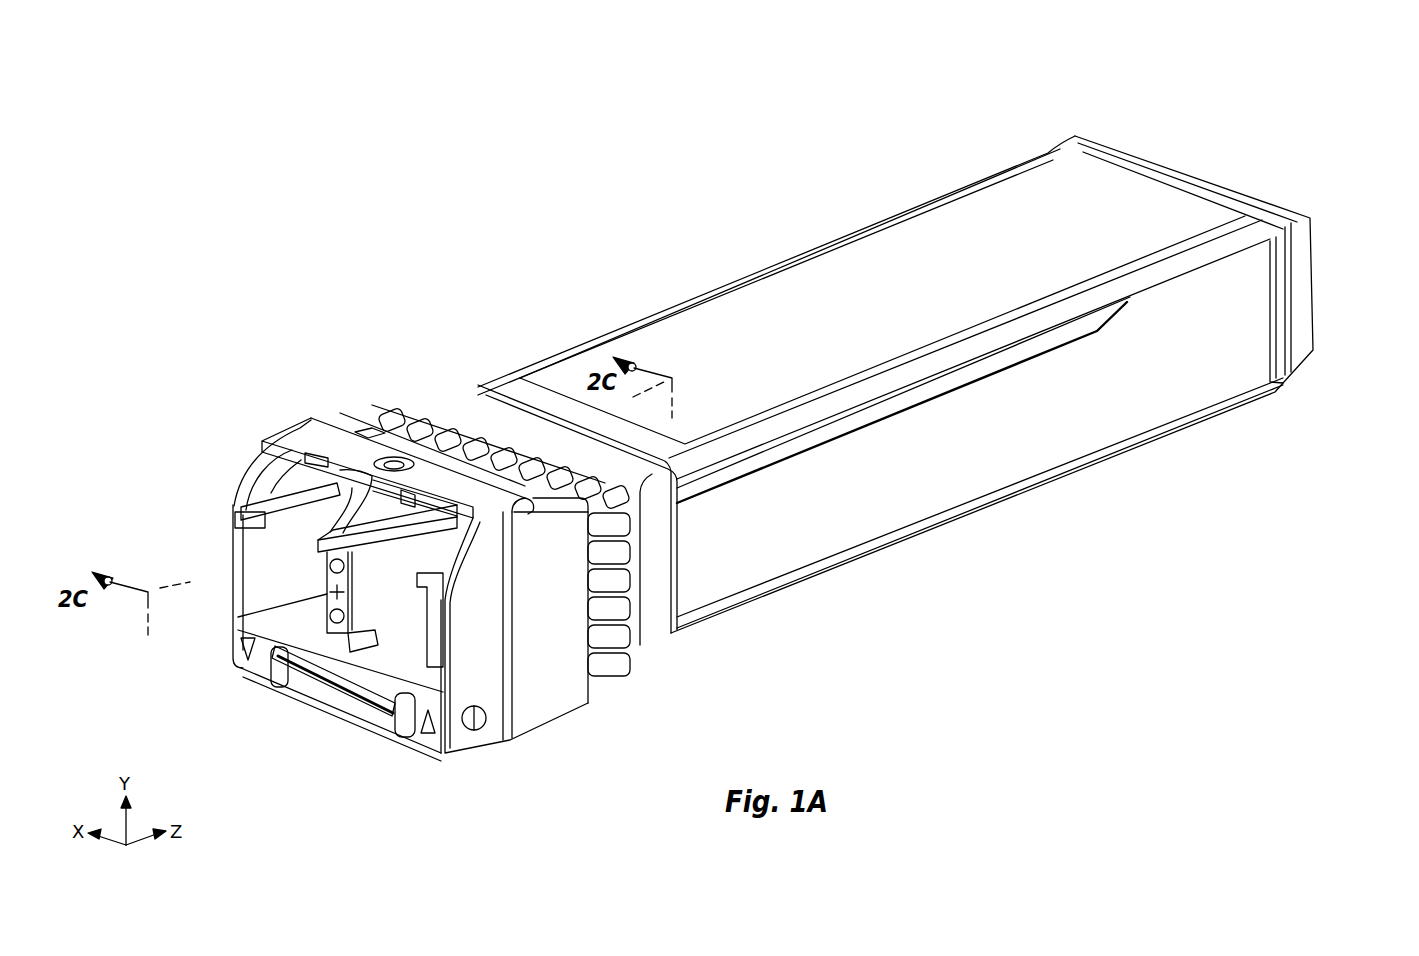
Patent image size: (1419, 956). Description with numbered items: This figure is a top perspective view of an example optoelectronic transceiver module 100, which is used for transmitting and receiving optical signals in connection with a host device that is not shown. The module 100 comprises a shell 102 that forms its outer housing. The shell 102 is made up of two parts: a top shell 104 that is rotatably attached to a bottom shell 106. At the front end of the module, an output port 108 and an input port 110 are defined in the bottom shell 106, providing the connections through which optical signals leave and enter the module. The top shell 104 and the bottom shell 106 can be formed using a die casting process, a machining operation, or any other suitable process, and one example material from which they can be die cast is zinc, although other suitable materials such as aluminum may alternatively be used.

The optoelectronic transceiver module 100 is at (1178, 82).
The shell 102 is at (1325, 197).
The top shell 104 is at (775, 312).
The bottom shell 106 is at (935, 462).
The output port 108 is at (311, 617).
The input port 110 is at (410, 652).